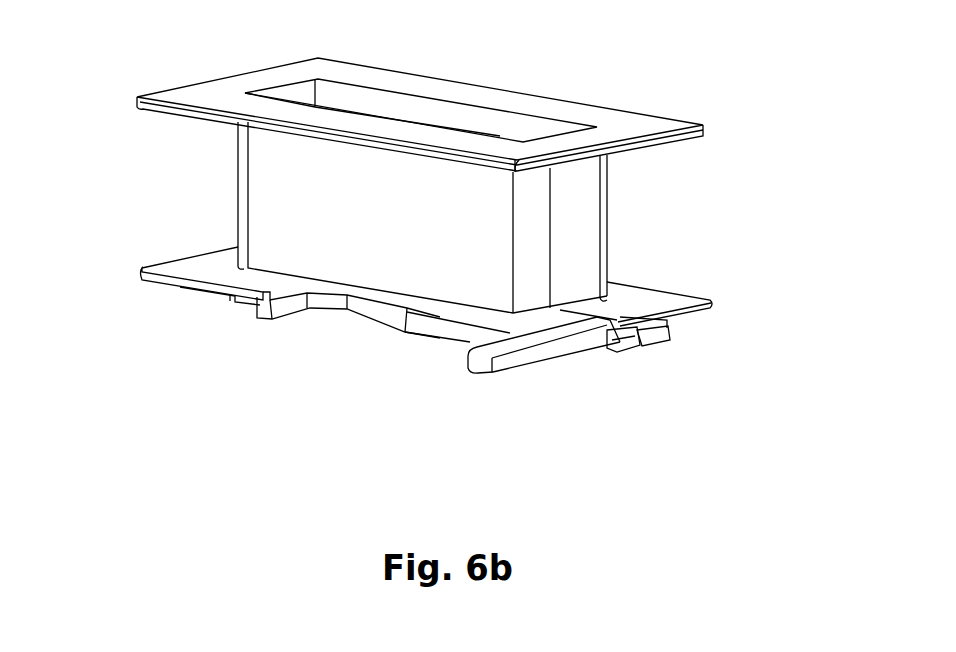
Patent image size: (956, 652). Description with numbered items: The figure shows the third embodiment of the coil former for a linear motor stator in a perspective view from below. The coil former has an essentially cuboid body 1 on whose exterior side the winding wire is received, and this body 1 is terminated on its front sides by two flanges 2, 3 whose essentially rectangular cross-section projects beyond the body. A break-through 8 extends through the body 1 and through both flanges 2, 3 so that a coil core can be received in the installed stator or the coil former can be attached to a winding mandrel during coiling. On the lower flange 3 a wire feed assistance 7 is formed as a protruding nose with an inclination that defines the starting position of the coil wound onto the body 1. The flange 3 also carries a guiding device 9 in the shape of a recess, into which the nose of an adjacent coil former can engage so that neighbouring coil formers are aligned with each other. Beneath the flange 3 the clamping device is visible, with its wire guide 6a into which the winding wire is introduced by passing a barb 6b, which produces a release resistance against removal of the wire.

The body 1 is at (262, 180).
The flange 2 is at (575, 113).
The flange 3 is at (175, 262).
The wire guide 6a is at (602, 347).
The barb 6b is at (668, 345).
The wire feed assistance 7 is at (480, 365).
The break-through 8 is at (485, 127).
The guiding device 9 is at (360, 325).